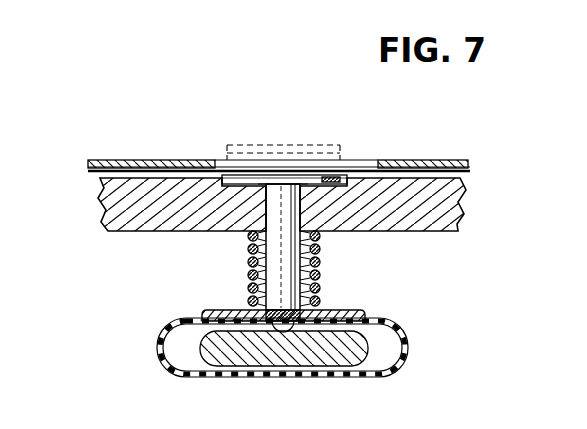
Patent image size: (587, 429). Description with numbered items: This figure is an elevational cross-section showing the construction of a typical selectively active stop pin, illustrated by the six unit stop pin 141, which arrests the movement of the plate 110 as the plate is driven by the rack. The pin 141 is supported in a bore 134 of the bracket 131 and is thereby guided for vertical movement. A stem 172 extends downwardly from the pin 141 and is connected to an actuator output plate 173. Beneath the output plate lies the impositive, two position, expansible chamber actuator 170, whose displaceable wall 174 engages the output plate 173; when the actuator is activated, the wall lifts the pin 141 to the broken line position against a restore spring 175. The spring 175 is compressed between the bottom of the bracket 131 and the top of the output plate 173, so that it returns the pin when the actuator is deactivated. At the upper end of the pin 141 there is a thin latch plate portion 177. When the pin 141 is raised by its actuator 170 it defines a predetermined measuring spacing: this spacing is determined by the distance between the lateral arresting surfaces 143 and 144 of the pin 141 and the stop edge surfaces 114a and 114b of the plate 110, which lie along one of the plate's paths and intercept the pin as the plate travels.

The plate 110 is at (455, 161).
The stop edge surface 114a is at (378, 163).
The stop edge surface 114b is at (212, 161).
The bracket 131 is at (456, 233).
The bore 134 is at (261, 203).
The six unit stop pin 141 is at (256, 231).
The lateral arresting surface 143 is at (304, 174).
The lateral arresting surface 144 is at (300, 181).
The thin latch plate portion 177 is at (333, 177).
The expansible chamber actuator 170 is at (385, 314).
The stem 172 is at (296, 255).
The actuator output plate 173 is at (338, 310).
The displaceable wall 174 is at (188, 320).
The restore spring 175 is at (322, 255).